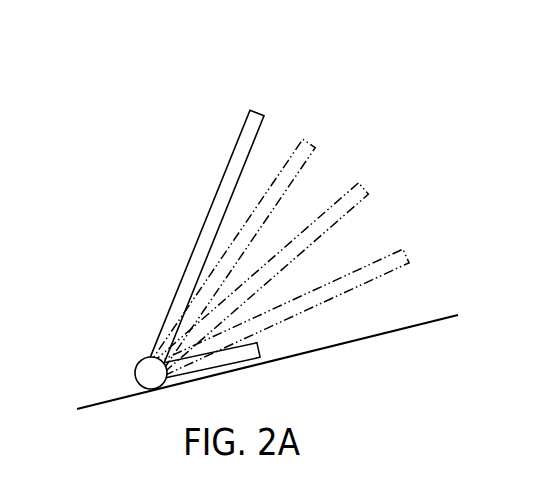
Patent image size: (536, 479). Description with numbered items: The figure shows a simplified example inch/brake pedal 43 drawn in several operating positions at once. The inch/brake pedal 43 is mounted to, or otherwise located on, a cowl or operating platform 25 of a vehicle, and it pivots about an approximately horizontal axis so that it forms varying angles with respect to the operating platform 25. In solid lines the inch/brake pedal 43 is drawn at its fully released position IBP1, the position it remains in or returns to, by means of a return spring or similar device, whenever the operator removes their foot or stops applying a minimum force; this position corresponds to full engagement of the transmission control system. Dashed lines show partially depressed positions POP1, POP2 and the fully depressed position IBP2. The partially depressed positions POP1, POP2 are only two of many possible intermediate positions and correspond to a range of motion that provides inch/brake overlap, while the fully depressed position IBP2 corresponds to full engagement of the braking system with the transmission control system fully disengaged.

The operating platform 25 is at (98, 383).
The inch/brake pedal 43 is at (190, 230).
The fully released position IBP1 is at (268, 108).
The partially depressed position POP1 is at (318, 135).
The partially depressed position POP2 is at (373, 185).
The fully depressed position IBP2 is at (410, 248).